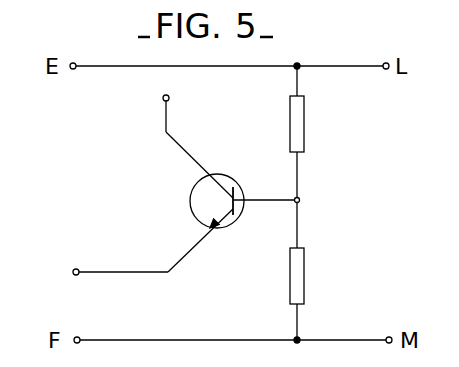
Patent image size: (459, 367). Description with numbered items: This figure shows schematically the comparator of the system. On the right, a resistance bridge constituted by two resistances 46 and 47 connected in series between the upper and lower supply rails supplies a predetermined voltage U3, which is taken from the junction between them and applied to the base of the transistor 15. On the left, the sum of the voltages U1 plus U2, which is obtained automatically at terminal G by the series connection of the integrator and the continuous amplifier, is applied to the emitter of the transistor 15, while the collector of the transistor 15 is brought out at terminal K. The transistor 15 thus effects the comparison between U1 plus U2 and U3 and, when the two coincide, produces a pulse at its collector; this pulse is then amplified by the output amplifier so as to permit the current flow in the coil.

The transistor 15 is at (200, 196).
The resistance 46 is at (300, 128).
The resistance 47 is at (305, 280).